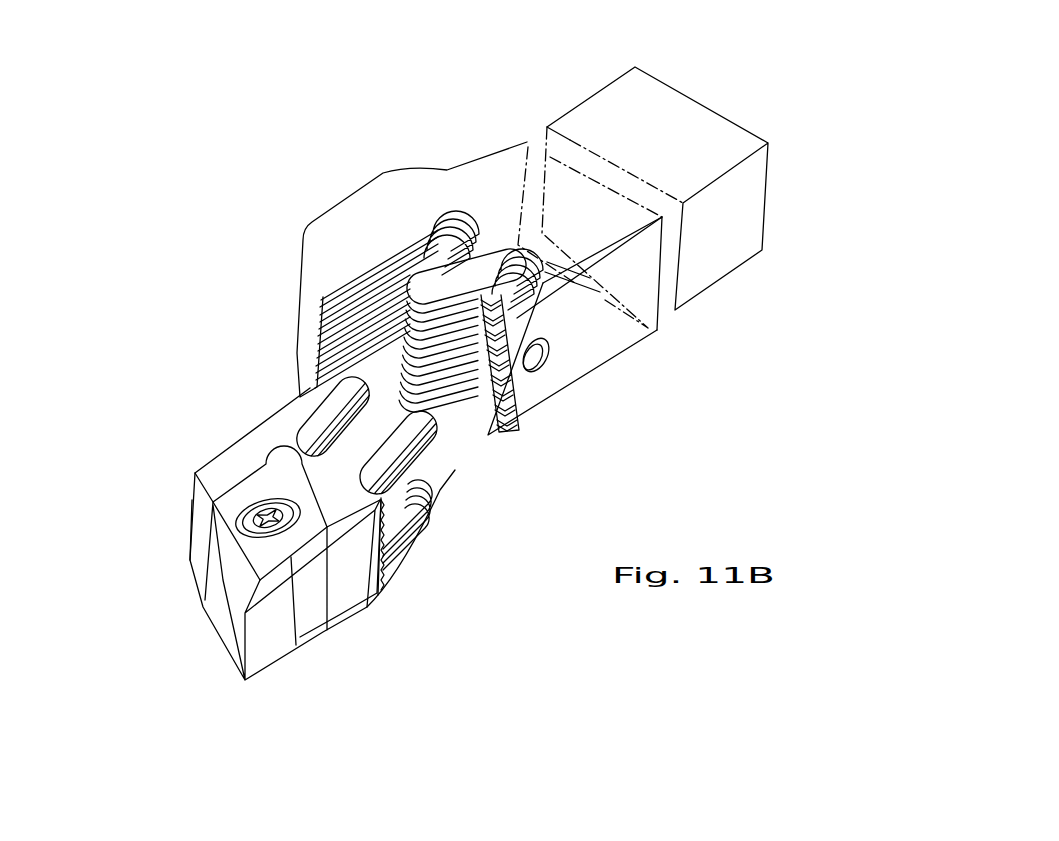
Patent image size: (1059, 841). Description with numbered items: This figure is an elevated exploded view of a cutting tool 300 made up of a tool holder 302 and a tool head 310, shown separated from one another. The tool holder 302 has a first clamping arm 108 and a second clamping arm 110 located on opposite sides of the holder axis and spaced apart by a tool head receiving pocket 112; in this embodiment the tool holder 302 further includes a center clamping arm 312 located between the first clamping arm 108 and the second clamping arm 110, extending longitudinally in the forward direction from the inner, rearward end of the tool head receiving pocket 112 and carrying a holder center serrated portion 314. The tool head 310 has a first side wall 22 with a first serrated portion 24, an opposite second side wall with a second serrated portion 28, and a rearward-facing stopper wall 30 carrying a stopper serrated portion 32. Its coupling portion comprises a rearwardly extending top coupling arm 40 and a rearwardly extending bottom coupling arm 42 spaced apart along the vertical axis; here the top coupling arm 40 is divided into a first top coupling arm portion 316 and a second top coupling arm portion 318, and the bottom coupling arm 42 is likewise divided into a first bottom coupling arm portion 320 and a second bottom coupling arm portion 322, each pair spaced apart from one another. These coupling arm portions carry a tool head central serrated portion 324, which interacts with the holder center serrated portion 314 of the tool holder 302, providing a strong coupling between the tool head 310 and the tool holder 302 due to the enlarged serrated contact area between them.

The cutting tool 300 is at (198, 214).
The tool holder 302 is at (525, 86).
The first clamping arm 108 is at (368, 220).
The center clamping arm 312 is at (470, 263).
The holder center serrated portion 314 is at (435, 403).
The second clamping arm 110 is at (513, 400).
The tool head central serrated portion 324 is at (437, 405).
The first side wall 22 is at (274, 416).
The first bottom coupling arm portion 320 is at (318, 410).
The top coupling arm 40 is at (266, 483).
The first top coupling arm portion 316 is at (300, 427).
The first serrated portion 24 is at (193, 487).
The tool head 310 is at (159, 568).
The stopper wall 30 is at (275, 606).
The stopper serrated portion 32 is at (323, 632).
The second serrated portion 28 is at (400, 540).
The bottom coupling arm 42 is at (402, 564).
The second bottom coupling arm portion 322 is at (410, 530).
The second top coupling arm portion 318 is at (425, 415).
The tool head receiving pocket 112 is at (452, 474).